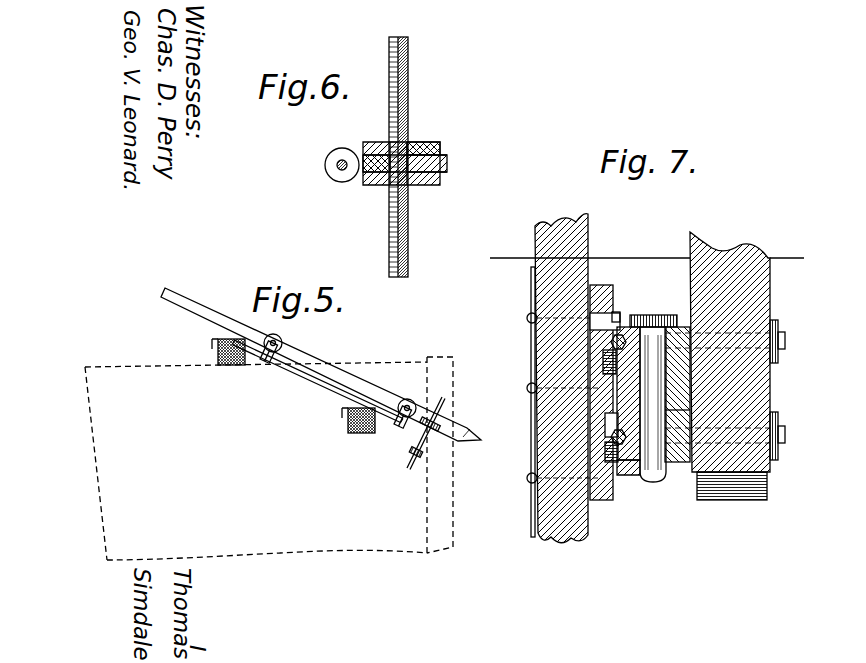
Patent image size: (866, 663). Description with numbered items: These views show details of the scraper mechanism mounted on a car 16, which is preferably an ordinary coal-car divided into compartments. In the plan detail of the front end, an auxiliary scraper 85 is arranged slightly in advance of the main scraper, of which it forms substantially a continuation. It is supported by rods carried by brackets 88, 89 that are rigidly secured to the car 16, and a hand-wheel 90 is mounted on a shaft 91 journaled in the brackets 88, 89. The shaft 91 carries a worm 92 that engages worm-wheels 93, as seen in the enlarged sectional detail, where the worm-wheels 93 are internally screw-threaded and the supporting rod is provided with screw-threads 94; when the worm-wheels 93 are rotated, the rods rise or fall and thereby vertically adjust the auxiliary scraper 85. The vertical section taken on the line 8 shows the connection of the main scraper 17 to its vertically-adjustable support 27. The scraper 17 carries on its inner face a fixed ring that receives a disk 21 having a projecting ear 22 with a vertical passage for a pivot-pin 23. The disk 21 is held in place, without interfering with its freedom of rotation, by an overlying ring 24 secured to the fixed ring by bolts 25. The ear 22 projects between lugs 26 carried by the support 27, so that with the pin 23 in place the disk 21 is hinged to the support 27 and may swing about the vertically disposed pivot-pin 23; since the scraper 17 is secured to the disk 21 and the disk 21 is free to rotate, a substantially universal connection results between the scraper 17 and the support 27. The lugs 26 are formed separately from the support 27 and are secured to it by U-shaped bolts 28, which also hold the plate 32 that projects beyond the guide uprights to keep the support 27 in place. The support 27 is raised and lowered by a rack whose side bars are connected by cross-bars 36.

In FIG. 7, the section line 8 8 is at (646, 261).
In FIG. 5, the car 16 is at (269, 458).
In FIG. 7, the main scraper 17 is at (556, 536).
In FIG. 7, the disk 21 is at (533, 432).
In FIG. 7, the projecting ear 22 is at (675, 462).
In FIG. 7, the pivot-pin 23 is at (647, 330).
In FIG. 7, the ring 24 is at (612, 496).
In FIG. 7, the bolts 25 is at (527, 318).
In FIG. 7, the lugs 26 is at (679, 337).
In FIG. 7, the vertically-adjustable support 27 is at (760, 386).
In FIG. 7, the U-shaped bolts 28 is at (786, 340).
In FIG. 7, the plate 32 is at (779, 325).
In FIG. 6, the cross-bars 36 is at (389, 232).
In FIG. 5, the auxiliary scraper 85 is at (353, 380).
In FIG. 5, the bracket 88 is at (268, 352).
In FIG. 5, the bracket 89 is at (382, 421).
In FIG. 5, the hand-wheel 90 is at (427, 441).
In FIG. 6, the shaft 91 is at (325, 168).
In FIG. 5, the shaft 91 is at (327, 386).
In FIG. 6, the worm 92 is at (339, 172).
In FIG. 6, the worm-wheels 93 is at (447, 164).
In FIG. 5, the worm-wheels 93 is at (409, 399).
In FIG. 6, the screw-threads 94 is at (410, 190).